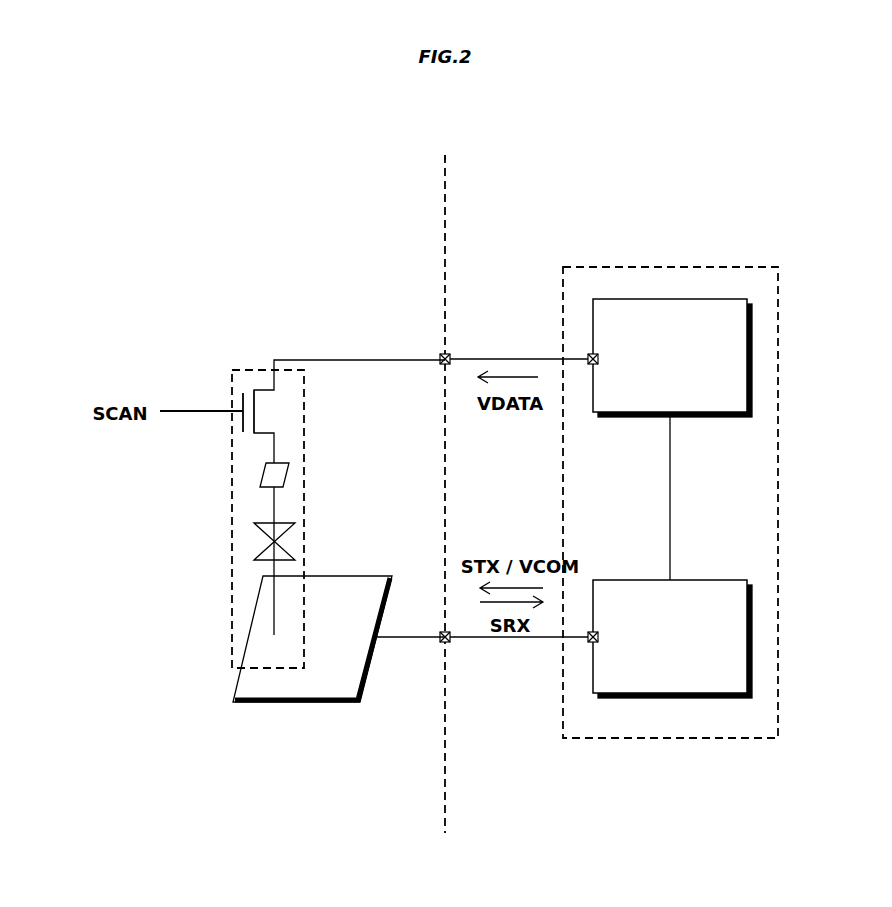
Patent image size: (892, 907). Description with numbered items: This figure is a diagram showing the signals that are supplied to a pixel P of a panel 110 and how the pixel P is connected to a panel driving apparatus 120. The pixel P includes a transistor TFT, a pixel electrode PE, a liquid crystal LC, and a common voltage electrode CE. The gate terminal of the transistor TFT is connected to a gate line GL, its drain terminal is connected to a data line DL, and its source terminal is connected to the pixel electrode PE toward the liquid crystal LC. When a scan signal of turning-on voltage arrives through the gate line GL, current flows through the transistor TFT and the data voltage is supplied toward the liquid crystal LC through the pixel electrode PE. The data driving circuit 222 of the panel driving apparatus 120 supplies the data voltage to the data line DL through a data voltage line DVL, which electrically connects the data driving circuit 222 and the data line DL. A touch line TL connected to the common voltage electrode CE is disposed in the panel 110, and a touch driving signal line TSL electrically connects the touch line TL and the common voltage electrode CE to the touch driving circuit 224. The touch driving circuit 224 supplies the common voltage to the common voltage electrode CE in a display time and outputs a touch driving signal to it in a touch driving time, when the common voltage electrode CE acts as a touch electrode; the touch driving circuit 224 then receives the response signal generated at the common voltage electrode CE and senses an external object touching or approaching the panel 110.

The panel 110 is at (385, 199).
The panel driving apparatus 120 is at (717, 738).
The data driving circuit 222 is at (672, 358).
The touch driving circuit 224 is at (672, 639).
The data voltage line DVL is at (500, 359).
The touch driving signal line TSL is at (515, 638).
The touch line TL is at (408, 637).
The pixel P is at (295, 433).
The data line DL is at (295, 360).
The transistor TFT is at (243, 390).
The gate line GL is at (192, 415).
The pixel electrode PE is at (288, 475).
The liquid crystal LC is at (257, 558).
The common voltage electrode CE is at (307, 704).